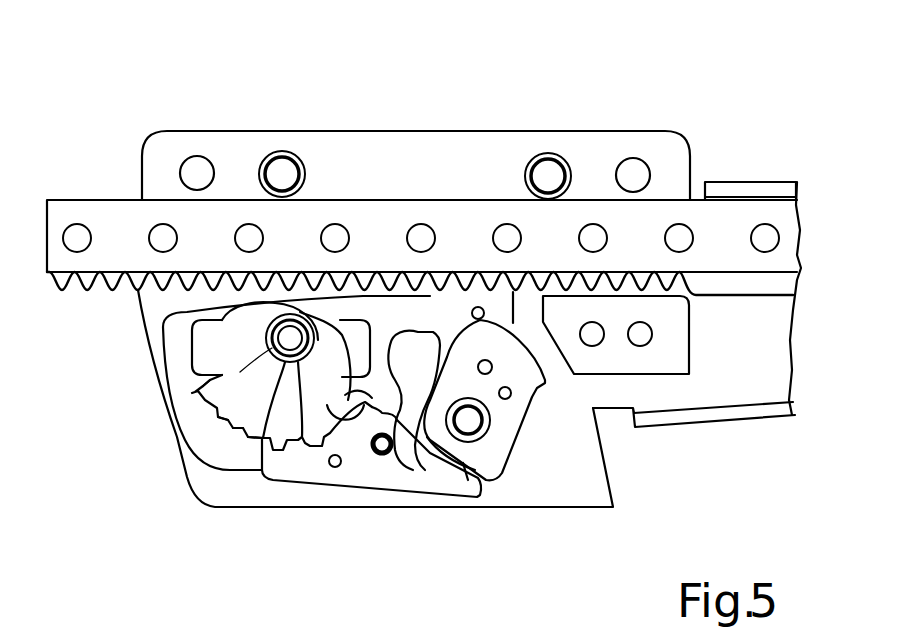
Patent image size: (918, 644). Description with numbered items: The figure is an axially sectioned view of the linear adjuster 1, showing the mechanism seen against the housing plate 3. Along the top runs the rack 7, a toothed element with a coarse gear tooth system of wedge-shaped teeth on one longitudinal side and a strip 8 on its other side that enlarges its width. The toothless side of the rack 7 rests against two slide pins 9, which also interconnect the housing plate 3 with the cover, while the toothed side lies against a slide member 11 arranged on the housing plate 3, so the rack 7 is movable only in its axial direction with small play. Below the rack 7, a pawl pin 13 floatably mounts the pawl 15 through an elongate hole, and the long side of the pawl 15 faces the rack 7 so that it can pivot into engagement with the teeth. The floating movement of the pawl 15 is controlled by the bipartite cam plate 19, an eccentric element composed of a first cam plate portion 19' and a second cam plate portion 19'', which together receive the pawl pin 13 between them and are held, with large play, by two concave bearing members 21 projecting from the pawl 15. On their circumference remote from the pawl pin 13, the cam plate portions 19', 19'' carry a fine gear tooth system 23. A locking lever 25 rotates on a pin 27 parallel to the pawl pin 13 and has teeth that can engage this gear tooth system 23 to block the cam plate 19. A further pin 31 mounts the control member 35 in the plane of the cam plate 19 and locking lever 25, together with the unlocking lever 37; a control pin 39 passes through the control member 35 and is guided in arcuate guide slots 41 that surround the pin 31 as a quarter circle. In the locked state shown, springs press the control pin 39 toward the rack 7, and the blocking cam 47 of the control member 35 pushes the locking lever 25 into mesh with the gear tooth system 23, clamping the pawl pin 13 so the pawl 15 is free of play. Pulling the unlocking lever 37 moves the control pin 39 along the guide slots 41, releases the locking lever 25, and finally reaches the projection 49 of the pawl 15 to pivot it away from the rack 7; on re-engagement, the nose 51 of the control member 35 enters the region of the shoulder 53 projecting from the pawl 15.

The adjuster 1 is at (698, 122).
The housing plate 3 is at (387, 175).
The rack 7 is at (85, 292).
The strip 8 is at (118, 215).
The slide pins 9 is at (270, 182).
The slide member 11 is at (662, 350).
The pawl pin 13 is at (212, 503).
The pawl 15 is at (263, 302).
The cam plate 19 is at (132, 417).
The first cam plate portion 19' is at (188, 472).
The second cam plate portion 19'' is at (173, 424).
The bearing members 21 is at (207, 340).
The gear tooth system 23 is at (272, 402).
The locking lever 25 is at (318, 460).
The pin 27 is at (382, 455).
The pin 31 is at (485, 428).
The control member 35 is at (537, 390).
The unlocking lever 37 is at (463, 475).
The control pin 39 is at (510, 398).
The guide slots 41 is at (415, 430).
The blocking cam 47 is at (487, 470).
The projection 49 is at (367, 432).
The nose 51 is at (492, 369).
The shoulder 53 is at (481, 315).